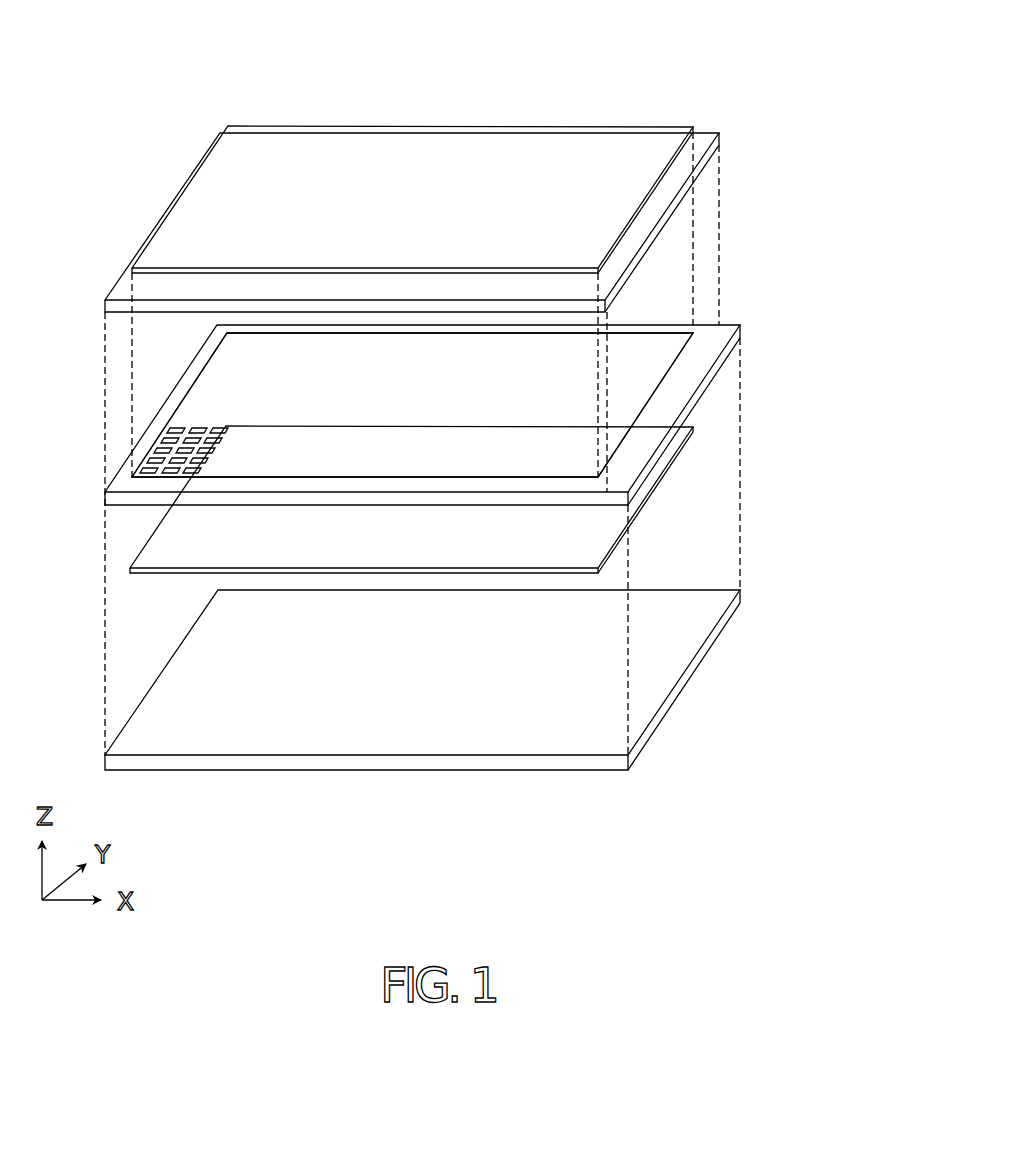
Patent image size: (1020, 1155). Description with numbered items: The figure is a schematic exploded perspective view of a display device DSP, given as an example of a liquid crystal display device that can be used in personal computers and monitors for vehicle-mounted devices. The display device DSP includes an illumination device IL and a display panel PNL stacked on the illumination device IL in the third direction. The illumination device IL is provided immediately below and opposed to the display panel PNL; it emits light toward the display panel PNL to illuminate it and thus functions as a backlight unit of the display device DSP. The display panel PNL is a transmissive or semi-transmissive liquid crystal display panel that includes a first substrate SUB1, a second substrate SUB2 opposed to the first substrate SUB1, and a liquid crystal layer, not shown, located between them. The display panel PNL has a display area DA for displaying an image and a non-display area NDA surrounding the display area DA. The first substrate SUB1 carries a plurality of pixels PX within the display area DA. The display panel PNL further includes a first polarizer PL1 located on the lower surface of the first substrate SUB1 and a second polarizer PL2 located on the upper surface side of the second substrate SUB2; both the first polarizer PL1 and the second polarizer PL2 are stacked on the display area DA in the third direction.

The display device DSP is at (812, 50).
The display panel PNL is at (777, 112).
The second polarizer PL2 is at (660, 136).
The second substrate SUB2 is at (715, 147).
The first substrate SUB1 is at (742, 327).
The non-display area NDA is at (208, 348).
The display area DA is at (214, 375).
The pixel PX is at (173, 430).
The first polarizer PL1 is at (662, 460).
The illumination device IL is at (758, 592).